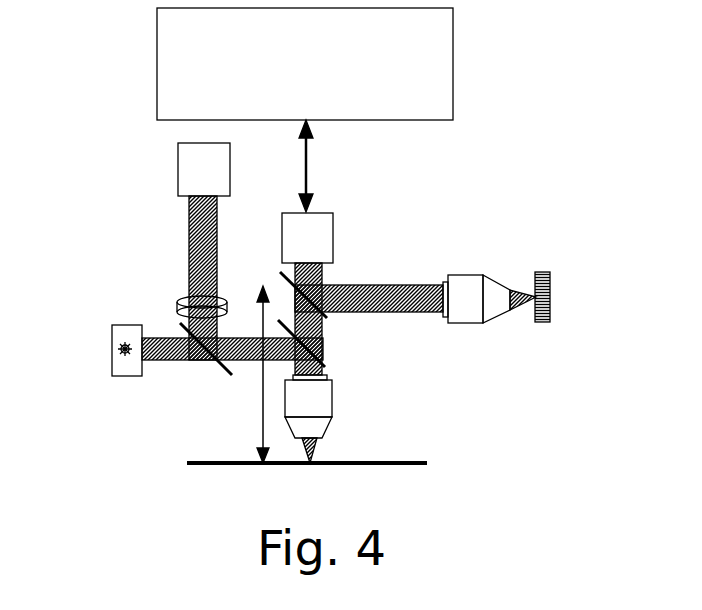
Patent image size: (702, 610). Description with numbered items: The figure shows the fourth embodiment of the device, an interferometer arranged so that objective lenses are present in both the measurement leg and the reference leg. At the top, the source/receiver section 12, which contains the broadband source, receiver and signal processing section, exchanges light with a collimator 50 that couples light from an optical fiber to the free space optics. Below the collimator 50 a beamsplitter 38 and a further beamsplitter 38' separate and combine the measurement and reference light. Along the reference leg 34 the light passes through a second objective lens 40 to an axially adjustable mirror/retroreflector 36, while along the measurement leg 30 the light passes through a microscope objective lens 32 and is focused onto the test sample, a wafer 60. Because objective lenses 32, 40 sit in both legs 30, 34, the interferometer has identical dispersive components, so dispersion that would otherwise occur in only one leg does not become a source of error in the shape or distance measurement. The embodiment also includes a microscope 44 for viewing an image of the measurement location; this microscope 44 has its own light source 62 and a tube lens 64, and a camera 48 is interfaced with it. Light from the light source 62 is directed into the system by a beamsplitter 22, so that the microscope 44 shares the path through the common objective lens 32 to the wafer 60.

The source/receiver section 12 is at (305, 110).
The camera 48 is at (178, 178).
The microscope 44 is at (190, 245).
The tube lens 64 is at (178, 300).
The light source 62 is at (112, 348).
The beamsplitter 22 is at (227, 377).
The measurement leg 30 is at (263, 398).
The collimator 50 is at (327, 243).
The reference leg 34 is at (403, 285).
The beamsplitter 38 is at (349, 310).
The beamsplitter 38' is at (351, 348).
The objective lens 40 is at (480, 275).
The mirror/retroreflector 36 is at (561, 297).
The objective lens 32 is at (313, 393).
The wafer 60 is at (330, 459).